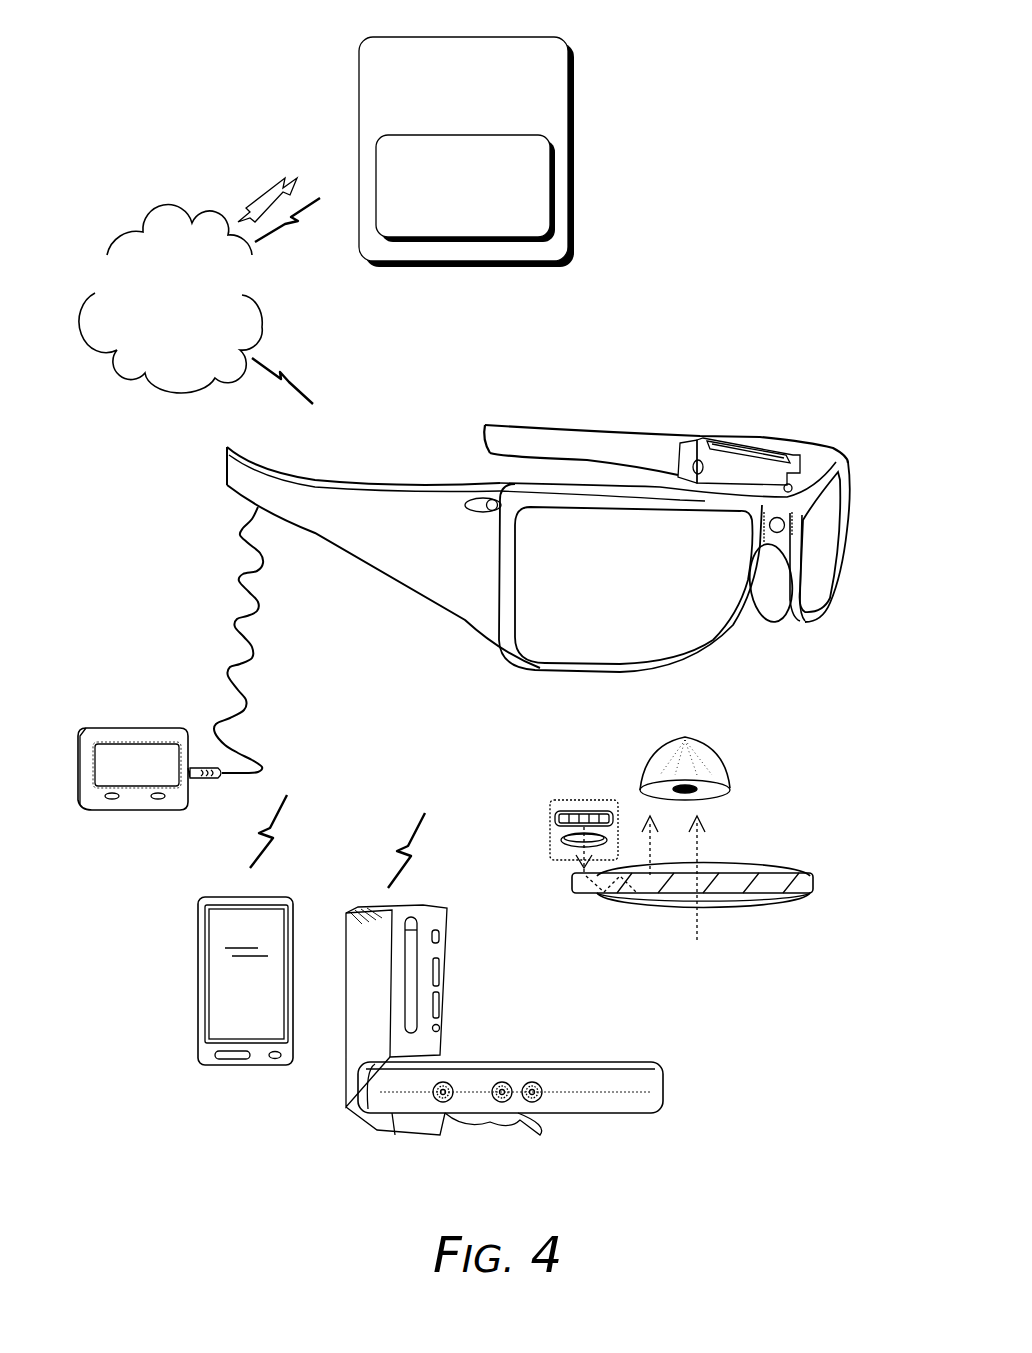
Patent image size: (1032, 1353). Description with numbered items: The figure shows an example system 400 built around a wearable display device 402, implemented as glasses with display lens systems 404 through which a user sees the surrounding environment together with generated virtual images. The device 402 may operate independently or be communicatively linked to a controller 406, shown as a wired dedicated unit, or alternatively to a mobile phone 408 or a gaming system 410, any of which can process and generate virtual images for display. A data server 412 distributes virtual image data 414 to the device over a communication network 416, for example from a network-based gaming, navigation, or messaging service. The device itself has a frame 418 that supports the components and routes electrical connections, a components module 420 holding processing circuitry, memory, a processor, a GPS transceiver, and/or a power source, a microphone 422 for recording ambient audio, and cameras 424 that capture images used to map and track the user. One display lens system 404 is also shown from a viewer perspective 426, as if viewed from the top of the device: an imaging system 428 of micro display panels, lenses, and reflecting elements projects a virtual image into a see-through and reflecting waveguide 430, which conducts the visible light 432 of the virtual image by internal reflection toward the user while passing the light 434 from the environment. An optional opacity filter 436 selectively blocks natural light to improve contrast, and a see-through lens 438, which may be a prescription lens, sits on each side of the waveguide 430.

The example system 400 is at (777, 68).
The wearable display device 402 is at (713, 348).
The display lens system 404 is at (687, 618).
The controller 406 is at (149, 784).
The mobile phone 408 is at (245, 997).
The gaming system 410 is at (504, 1037).
The data server 412 is at (466, 152).
The virtual image data 414 is at (465, 188).
The communication network 416 is at (170, 299).
The frame 418 is at (424, 568).
The components module 420 is at (790, 452).
The microphone 422 is at (783, 535).
The camera 424 is at (473, 497).
The viewer perspective 426 is at (590, 410).
The imaging system 428 is at (567, 800).
The see-through and reflecting waveguide 430 is at (775, 893).
The visible light 432 is at (638, 820).
The light from the surrounding environment 434 is at (678, 892).
The opacity filter 436 is at (715, 900).
The see-through lens 438 is at (762, 860).